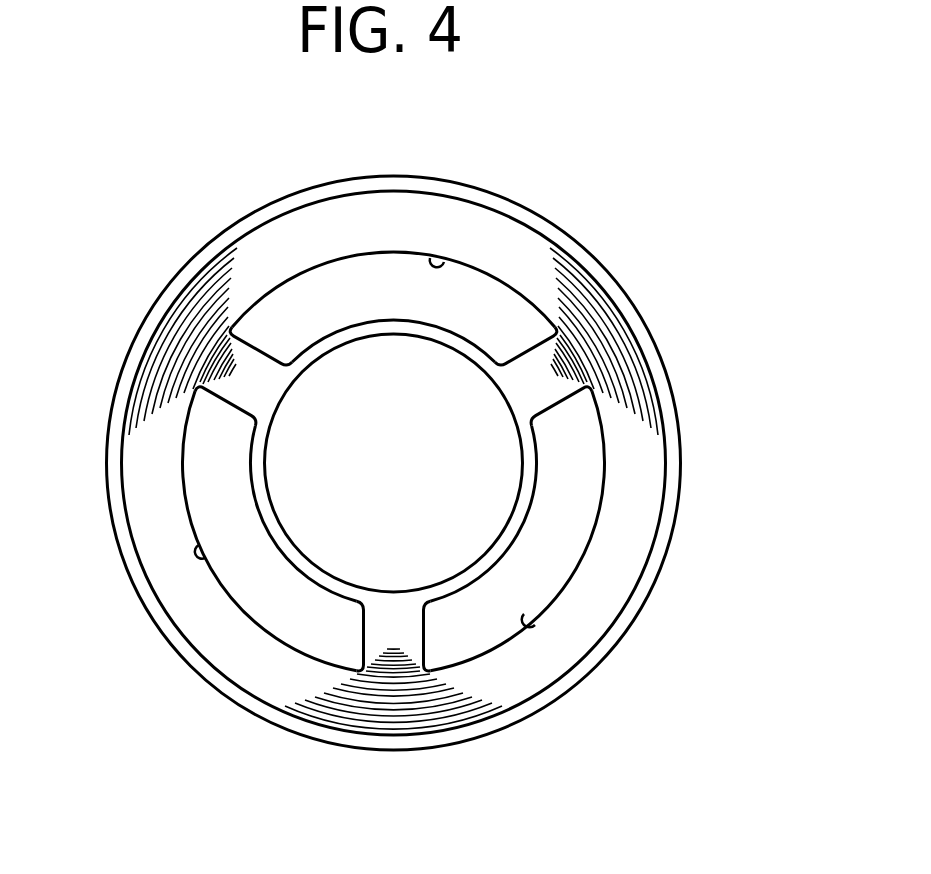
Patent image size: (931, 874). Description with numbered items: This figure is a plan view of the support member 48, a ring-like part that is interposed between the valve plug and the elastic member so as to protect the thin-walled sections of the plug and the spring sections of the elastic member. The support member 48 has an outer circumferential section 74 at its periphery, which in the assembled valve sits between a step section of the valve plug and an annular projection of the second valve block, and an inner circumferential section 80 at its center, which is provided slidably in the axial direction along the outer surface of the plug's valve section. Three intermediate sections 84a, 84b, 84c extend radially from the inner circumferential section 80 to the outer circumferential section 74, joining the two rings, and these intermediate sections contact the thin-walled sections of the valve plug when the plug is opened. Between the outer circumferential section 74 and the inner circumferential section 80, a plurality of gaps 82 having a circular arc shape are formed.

The support member 48 is at (563, 232).
The outer circumferential section 74 is at (625, 578).
The inner circumferential section 80 is at (288, 558).
The gaps 82 is at (444, 262).
The intermediate section 84a is at (553, 370).
The intermediate section 84b is at (385, 637).
The intermediate section 84c is at (215, 378).